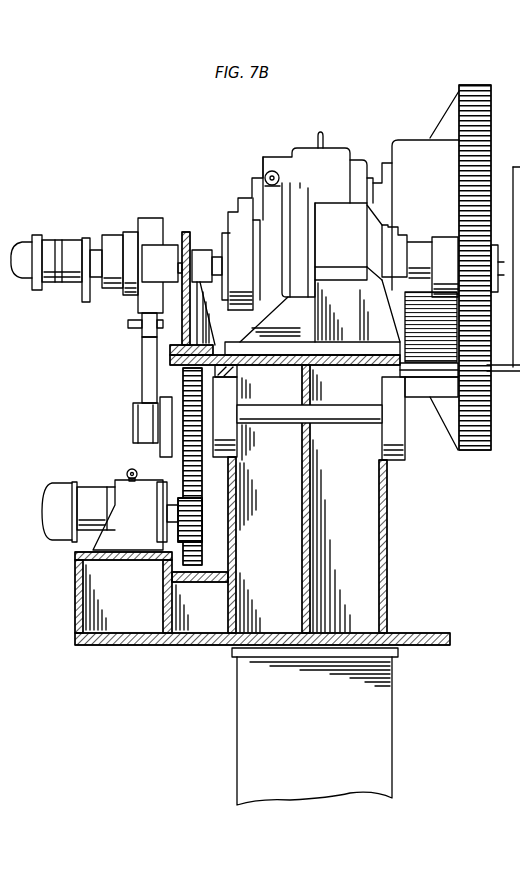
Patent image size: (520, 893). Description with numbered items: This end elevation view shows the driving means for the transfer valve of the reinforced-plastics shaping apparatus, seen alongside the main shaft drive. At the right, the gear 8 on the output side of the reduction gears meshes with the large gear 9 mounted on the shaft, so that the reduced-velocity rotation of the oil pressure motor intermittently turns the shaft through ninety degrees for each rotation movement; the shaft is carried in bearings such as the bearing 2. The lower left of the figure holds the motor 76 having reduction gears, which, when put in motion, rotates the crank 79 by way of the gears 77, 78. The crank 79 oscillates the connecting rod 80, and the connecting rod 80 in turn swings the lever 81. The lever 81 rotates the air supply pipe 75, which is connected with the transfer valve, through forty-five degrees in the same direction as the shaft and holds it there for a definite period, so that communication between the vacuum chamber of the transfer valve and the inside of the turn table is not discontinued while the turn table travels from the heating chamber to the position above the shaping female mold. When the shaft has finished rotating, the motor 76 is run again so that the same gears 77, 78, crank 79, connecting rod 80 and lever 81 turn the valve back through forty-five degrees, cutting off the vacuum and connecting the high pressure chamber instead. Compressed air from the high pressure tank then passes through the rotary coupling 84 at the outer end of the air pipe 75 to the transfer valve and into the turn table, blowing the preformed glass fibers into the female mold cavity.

The bearing 2 is at (337, 153).
The gear 8 is at (470, 222).
The gear 9 is at (478, 100).
The air supply pipe 75 is at (113, 237).
The motor having reduction gears 76 is at (53, 540).
The gear 77 is at (197, 556).
The gear 78 is at (203, 443).
The crank 79 is at (167, 450).
The connecting rod 80 is at (147, 377).
The lever 81 is at (145, 303).
The rotary coupling 84 is at (21, 250).